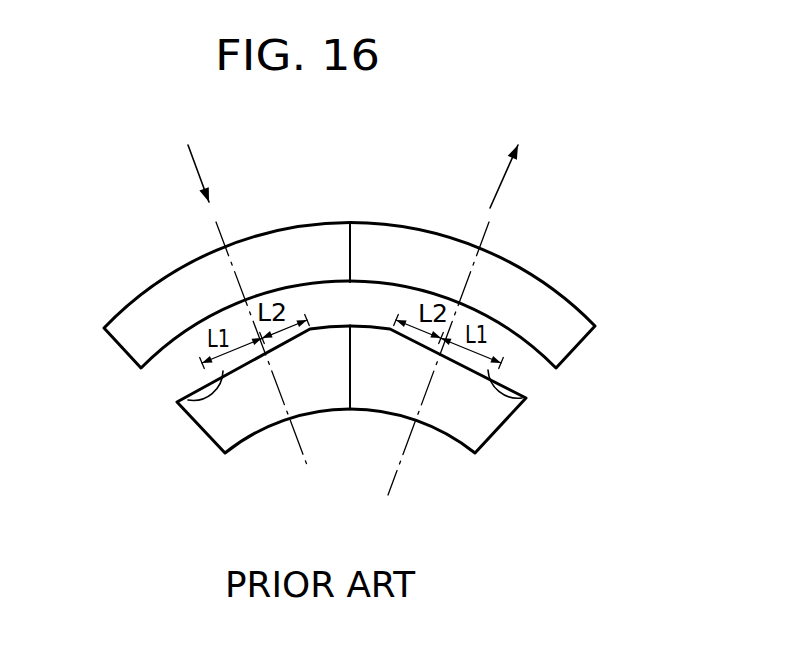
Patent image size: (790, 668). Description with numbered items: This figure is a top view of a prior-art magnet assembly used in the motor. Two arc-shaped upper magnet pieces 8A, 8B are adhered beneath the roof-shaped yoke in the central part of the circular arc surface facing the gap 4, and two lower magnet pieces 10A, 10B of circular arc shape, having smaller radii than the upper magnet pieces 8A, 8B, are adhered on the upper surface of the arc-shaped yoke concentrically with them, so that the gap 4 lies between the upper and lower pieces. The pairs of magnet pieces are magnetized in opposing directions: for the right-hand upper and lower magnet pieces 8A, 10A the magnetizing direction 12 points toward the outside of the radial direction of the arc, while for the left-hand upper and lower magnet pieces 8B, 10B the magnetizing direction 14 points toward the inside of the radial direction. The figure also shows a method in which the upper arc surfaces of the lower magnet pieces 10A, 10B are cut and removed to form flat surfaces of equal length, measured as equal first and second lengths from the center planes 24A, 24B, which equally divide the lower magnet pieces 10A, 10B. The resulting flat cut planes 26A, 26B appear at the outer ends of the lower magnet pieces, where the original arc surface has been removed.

The gap 4 is at (355, 314).
The upper magnet piece 8A is at (528, 290).
The upper magnet piece 8B is at (138, 326).
The lower magnet piece 10A is at (456, 432).
The lower magnet piece 10B is at (232, 433).
The magnetizing direction 12 is at (502, 188).
The magnetizing direction 14 is at (200, 170).
The center plane 24A is at (407, 455).
The center plane 24B is at (298, 452).
The cut plane 26A is at (522, 400).
The cut plane 26B is at (176, 403).